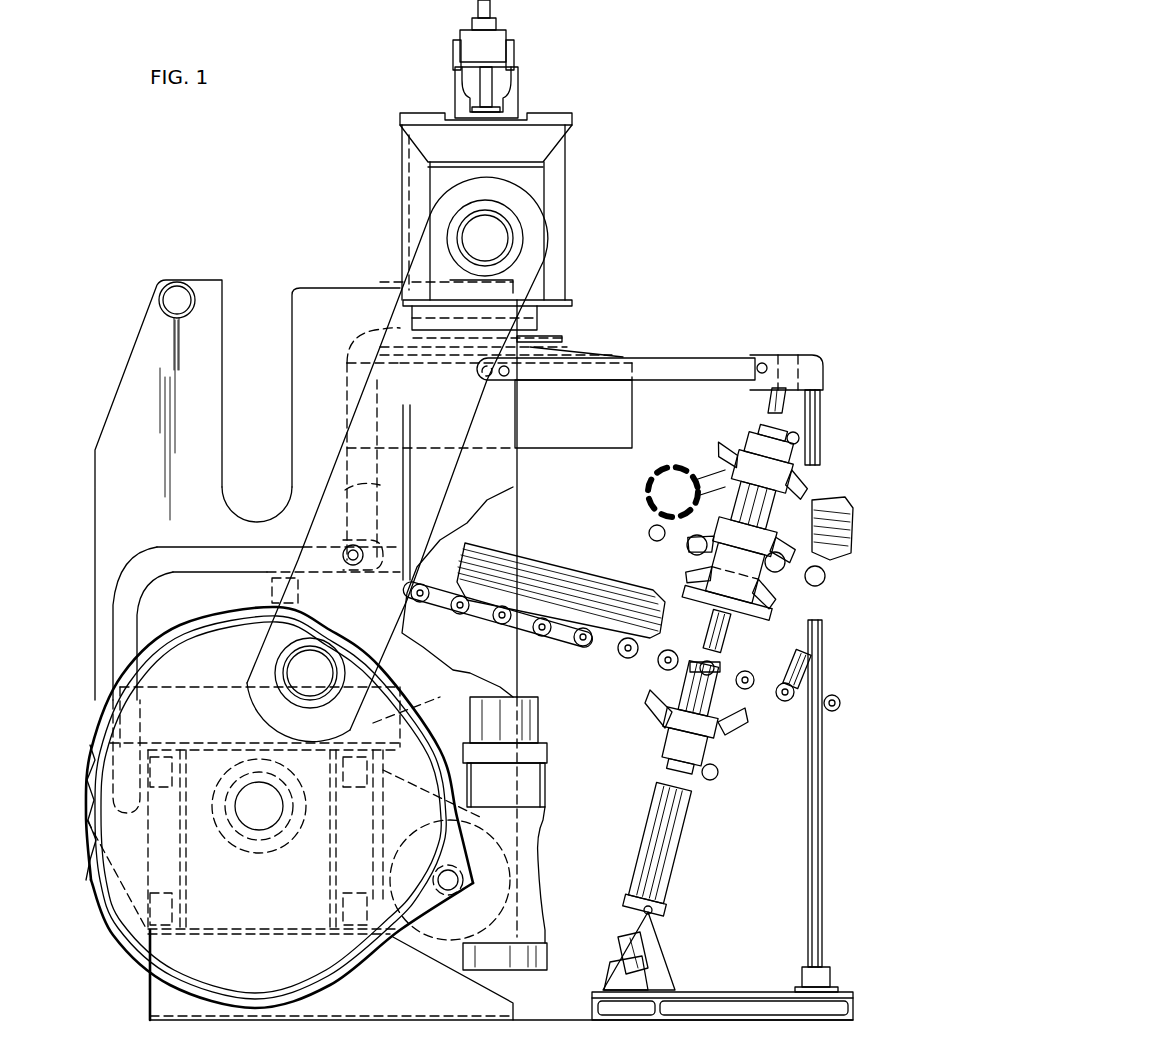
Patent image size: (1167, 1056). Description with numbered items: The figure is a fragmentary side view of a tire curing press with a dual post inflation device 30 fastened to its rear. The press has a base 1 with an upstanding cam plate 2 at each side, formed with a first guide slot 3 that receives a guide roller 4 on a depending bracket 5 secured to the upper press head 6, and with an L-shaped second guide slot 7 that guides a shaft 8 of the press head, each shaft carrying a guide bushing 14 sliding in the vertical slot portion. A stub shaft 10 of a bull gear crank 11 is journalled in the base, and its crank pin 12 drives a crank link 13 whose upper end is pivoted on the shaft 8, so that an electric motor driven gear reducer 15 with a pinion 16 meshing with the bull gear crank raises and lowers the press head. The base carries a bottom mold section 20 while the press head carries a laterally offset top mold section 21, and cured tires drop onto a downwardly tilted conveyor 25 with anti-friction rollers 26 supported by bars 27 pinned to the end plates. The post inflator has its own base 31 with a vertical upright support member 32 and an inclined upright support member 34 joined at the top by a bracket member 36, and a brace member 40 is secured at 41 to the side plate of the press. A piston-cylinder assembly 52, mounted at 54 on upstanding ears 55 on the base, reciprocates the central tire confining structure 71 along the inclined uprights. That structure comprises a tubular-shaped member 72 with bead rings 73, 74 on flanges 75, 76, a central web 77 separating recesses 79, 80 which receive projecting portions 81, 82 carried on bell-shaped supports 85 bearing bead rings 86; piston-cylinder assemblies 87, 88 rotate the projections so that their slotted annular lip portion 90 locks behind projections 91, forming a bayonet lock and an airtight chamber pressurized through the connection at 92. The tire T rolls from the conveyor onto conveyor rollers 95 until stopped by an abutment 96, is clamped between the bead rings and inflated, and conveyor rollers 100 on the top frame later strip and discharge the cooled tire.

The base 1 is at (378, 1022).
The cam plate 2 is at (140, 365).
The first guide slot 3 is at (152, 572).
The guide roller 4 is at (352, 568).
The depending bracket 5 is at (365, 488).
The upper press head 6 is at (560, 202).
The second guide slot 7 is at (225, 425).
The shaft 8 is at (497, 250).
The stub shaft 10 is at (262, 830).
The bull gear crank 11 is at (270, 980).
The crank pin 12 is at (335, 683).
The crank link 13 is at (438, 487).
The guide bushing 14 is at (518, 237).
The gear reducer 15 is at (530, 908).
The pinion 16 is at (458, 888).
The bottom mold section 20 is at (420, 710).
The top mold section 21 is at (628, 430).
The conveyor 25 is at (572, 660).
The anti-friction rollers 26 is at (422, 604).
The bars 27 is at (562, 640).
The dual post inflation device 30 is at (797, 318).
The base 31 is at (705, 1010).
The upright support member 32 is at (820, 430).
The upright support member 34 is at (770, 398).
The bracket member 36 is at (825, 375).
The brace member 40 is at (670, 360).
The brace securing point 41 is at (504, 378).
The piston-cylinder assembly 52 is at (680, 858).
The blind end mounting 54 is at (655, 911).
The upstanding ears 55 is at (640, 930).
The tire confining structure 71 is at (802, 596).
The tubular-shaped member 72 is at (710, 557).
The bead ring 73 is at (752, 600).
The bead ring 74 is at (802, 510).
The flange 75 is at (772, 598).
The flange 76 is at (690, 546).
The central web 77 is at (712, 588).
The recess 79 is at (730, 503).
The recess 80 is at (728, 605).
The projecting portion 81 is at (795, 490).
The projecting portion 82 is at (722, 708).
The bell-shaped support 85 is at (728, 740).
The bead ring 86 is at (745, 720).
The piston-cylinder assembly 87 is at (800, 438).
The piston-cylinder assembly 88 is at (718, 776).
The annular lip portion 90 is at (722, 672).
The projections 91 is at (708, 618).
The air conduit connection 92 is at (786, 560).
The conveyor rollers 95 is at (628, 660).
The abutment 96 is at (805, 672).
The conveyor rollers 100 is at (650, 536).
The tire T is at (585, 565).